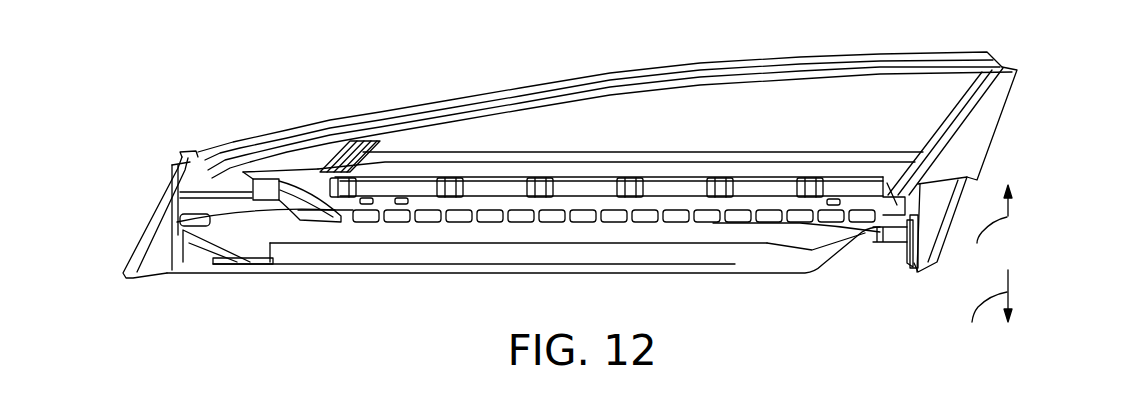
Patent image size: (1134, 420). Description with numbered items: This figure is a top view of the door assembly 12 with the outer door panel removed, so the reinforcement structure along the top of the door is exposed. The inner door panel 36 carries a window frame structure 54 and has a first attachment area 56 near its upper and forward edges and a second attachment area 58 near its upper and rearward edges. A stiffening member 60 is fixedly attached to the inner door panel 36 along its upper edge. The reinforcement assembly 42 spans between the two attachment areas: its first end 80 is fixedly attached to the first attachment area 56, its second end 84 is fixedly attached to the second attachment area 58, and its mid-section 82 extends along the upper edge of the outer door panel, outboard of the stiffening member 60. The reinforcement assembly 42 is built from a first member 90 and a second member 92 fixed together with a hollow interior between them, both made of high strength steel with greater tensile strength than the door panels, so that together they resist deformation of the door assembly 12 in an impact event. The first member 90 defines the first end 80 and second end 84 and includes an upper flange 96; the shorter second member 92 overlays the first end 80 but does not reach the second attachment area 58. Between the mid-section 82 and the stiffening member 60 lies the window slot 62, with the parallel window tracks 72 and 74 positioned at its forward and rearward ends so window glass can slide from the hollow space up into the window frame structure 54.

The door assembly 12 is at (455, 56).
The window frame structure 54 is at (561, 89).
The first attachment area 56 is at (293, 178).
The window track 72 is at (364, 157).
The upper flange 96 is at (570, 182).
The reinforcement assembly 42 is at (673, 184).
The inner door panel 36 is at (736, 152).
The window slot 62 is at (805, 170).
The stiffening member 60 is at (846, 173).
The first member 90 is at (898, 167).
The window track 74 is at (950, 113).
The second attachment area 58 is at (966, 178).
The first end 80 is at (304, 198).
The mid-section 82 is at (487, 200).
The second member 92 is at (583, 204).
The second end 84 is at (895, 226).